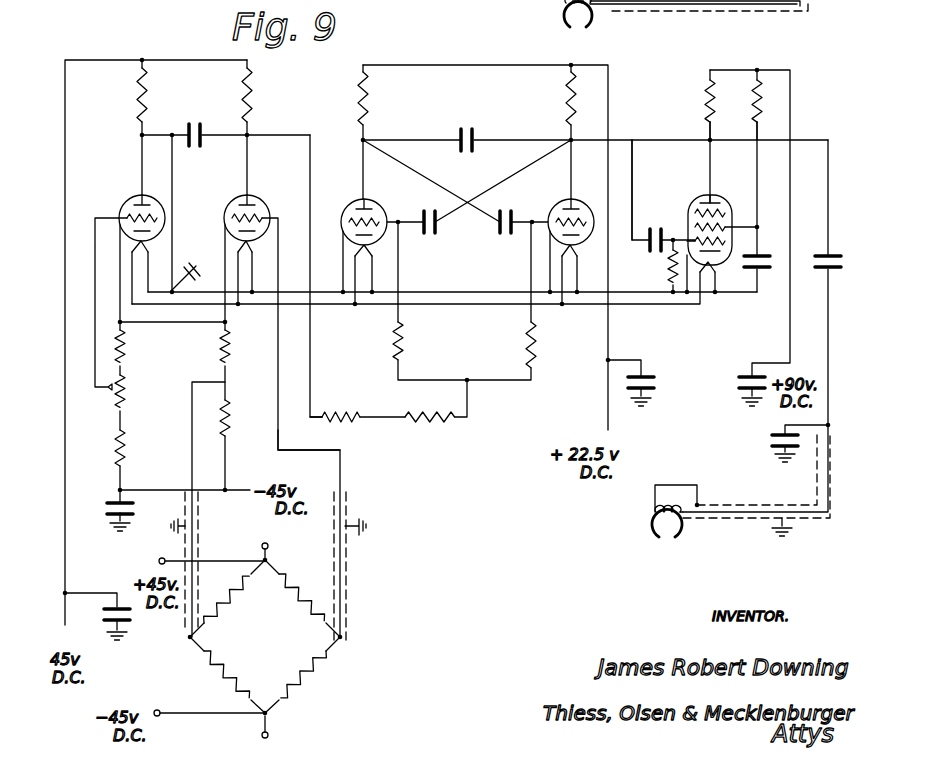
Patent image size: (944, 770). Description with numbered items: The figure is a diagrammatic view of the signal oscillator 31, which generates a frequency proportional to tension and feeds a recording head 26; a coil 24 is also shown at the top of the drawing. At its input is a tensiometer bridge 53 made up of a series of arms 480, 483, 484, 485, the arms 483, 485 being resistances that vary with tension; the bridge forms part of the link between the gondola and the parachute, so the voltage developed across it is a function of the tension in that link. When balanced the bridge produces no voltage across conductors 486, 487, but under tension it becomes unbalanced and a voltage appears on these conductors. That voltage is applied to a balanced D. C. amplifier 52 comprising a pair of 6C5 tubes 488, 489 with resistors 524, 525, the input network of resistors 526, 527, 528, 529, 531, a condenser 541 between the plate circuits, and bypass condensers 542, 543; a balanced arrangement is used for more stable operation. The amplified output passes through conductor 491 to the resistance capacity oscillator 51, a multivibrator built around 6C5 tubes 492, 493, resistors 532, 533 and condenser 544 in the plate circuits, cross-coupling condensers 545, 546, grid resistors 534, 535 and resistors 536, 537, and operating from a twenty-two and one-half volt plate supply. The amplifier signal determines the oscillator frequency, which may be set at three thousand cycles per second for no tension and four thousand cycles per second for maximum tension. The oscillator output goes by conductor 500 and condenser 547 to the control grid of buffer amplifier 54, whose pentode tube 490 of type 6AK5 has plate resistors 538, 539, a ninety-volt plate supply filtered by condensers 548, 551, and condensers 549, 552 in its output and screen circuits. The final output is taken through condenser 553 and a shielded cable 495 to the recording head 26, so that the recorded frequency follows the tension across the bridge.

The balanced D. C. amplifier 52 is at (305, 95).
The resistor 524 is at (148, 92).
The resistor 525 is at (240, 97).
The condenser 541 is at (190, 148).
The tube 488 is at (124, 207).
The tube 489 is at (258, 206).
The resistor 526 is at (127, 350).
The resistor 527 is at (127, 400).
The resistor 528 is at (127, 452).
The resistor 529 is at (219, 353).
The resistor 531 is at (231, 424).
The conductor 486 is at (192, 463).
The conductor 487 is at (277, 446).
The condenser 542 is at (105, 508).
The condenser 543 is at (120, 606).
The bridge 53 is at (279, 631).
The arm 480 is at (232, 612).
The arm 483 is at (295, 587).
The arm 484 is at (300, 673).
The arm 485 is at (210, 673).
The oscillator 51 is at (458, 65).
The resistor 532 is at (370, 102).
The resistor 533 is at (565, 96).
The condenser 544 is at (480, 105).
The tube 492 is at (381, 205).
The tube 493 is at (560, 205).
The condenser 545 is at (428, 235).
The condenser 546 is at (504, 235).
The conductor 491 is at (312, 360).
The resistor 534 is at (403, 333).
The resistor 535 is at (525, 346).
The resistor 536 is at (350, 400).
The resistor 537 is at (425, 426).
The signal oscillator 31 is at (505, 478).
The buffer amplifier 54 is at (677, 130).
The resistor 538 is at (708, 88).
The resistor 539 is at (765, 118).
The conductor 500 is at (633, 160).
The buffer amplifier tube 490 is at (699, 201).
The condenser 547 is at (652, 253).
The condenser 549 is at (762, 272).
The condenser 552 is at (822, 275).
The condenser 548 is at (648, 372).
The condenser 551 is at (738, 384).
The condenser 553 is at (772, 442).
The shielded cable 495 is at (737, 503).
The recording head 26 is at (690, 537).
The input coil 24 is at (562, 14).